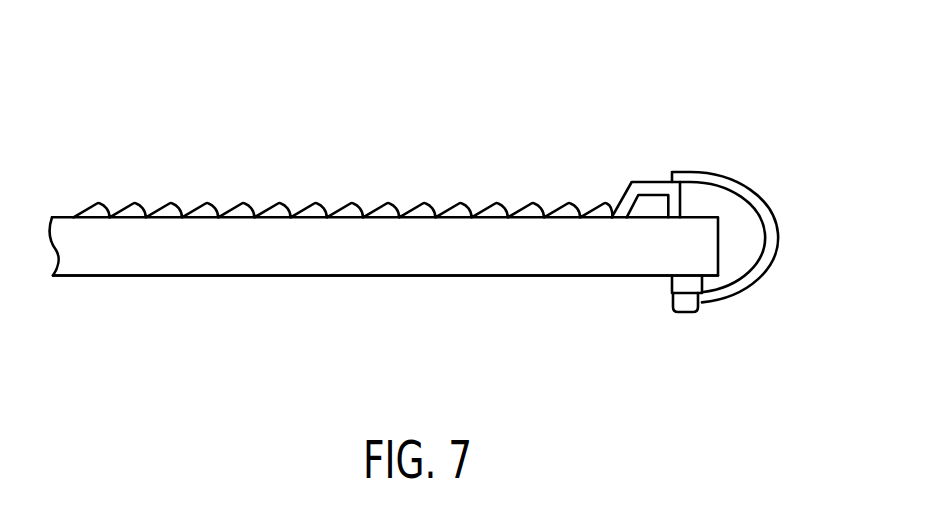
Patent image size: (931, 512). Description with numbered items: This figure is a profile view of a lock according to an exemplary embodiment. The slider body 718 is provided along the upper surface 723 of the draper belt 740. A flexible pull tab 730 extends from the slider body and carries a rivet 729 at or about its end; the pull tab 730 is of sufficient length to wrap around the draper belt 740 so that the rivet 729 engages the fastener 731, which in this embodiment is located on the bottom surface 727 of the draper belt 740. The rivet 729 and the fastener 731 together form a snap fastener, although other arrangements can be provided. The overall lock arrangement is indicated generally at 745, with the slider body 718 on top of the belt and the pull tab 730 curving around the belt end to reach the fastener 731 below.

The slider body 718 is at (656, 181).
The upper surface 723 is at (63, 215).
The bottom surface 727 is at (210, 277).
The rivet 729 is at (683, 312).
The flexible pull tab 730 is at (775, 248).
The fastener 731 is at (670, 282).
The draper belt 740 is at (308, 258).
The fastening assembly 745 is at (730, 209).